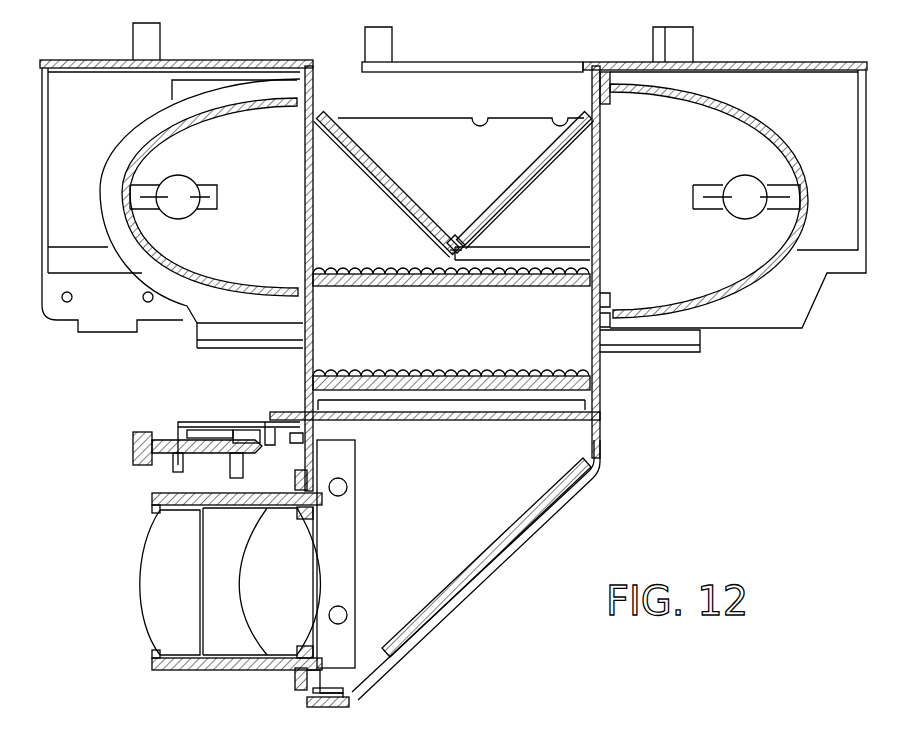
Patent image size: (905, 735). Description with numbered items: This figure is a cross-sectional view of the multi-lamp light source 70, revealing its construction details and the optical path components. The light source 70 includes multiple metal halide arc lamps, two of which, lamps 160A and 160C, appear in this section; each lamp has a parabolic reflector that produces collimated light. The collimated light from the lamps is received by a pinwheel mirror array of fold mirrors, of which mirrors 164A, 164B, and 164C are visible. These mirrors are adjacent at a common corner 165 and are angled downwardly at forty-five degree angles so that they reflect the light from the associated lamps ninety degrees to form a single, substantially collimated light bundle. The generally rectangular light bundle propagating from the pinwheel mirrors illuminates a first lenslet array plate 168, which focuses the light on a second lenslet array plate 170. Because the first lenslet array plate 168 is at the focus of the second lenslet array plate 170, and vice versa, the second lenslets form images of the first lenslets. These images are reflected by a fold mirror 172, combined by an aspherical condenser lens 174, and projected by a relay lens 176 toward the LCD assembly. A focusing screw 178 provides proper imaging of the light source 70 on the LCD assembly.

The light source 70 is at (759, 475).
The metal halide arc lamp 160A is at (122, 148).
The metal halide arc lamp 160C is at (748, 108).
The fold mirror 164A is at (393, 197).
The fold mirror 164B is at (455, 256).
The fold mirror 164C is at (505, 213).
The common corner 165 is at (456, 246).
The first lenslet array plate 168 is at (438, 283).
The second lenslet array plate 170 is at (418, 383).
The fold mirror 172 is at (466, 566).
The aspherical condenser lens 174 is at (268, 630).
The relay lens 176 is at (162, 604).
The focusing screw 178 is at (163, 440).